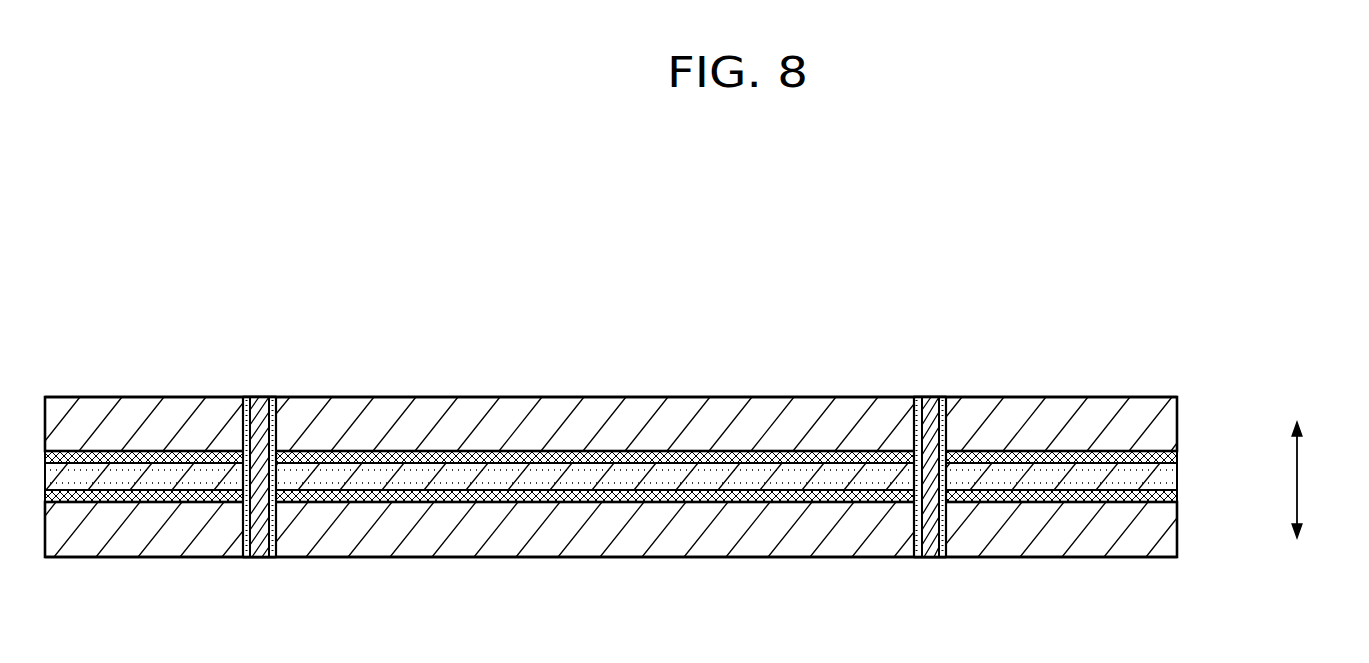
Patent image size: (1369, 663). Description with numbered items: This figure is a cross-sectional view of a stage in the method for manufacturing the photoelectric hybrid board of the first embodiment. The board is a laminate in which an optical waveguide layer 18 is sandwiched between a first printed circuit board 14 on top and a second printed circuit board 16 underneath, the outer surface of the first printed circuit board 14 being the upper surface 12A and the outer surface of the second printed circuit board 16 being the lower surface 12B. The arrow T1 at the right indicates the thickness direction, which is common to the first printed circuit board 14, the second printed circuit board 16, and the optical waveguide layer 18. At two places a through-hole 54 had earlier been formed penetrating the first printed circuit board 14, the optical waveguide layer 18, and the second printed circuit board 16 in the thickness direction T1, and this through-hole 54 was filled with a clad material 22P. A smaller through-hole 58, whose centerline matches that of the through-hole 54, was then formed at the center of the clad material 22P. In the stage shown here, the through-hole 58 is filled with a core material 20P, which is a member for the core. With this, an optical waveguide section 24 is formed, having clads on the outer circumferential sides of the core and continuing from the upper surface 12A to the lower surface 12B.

The upper surface 12A is at (607, 397).
The lower surface 12B is at (590, 558).
The first printed circuit board 14 is at (1180, 415).
The second printed circuit board 16 is at (1180, 530).
The optical waveguide layer 18 is at (1180, 478).
The core material 20P is at (252, 397).
The clad material 22P is at (247, 397).
The through-hole 58 is at (271, 397).
The optical waveguide section 24 is at (252, 558).
The through-hole 54 is at (262, 558).
The thickness direction T1 is at (1300, 478).